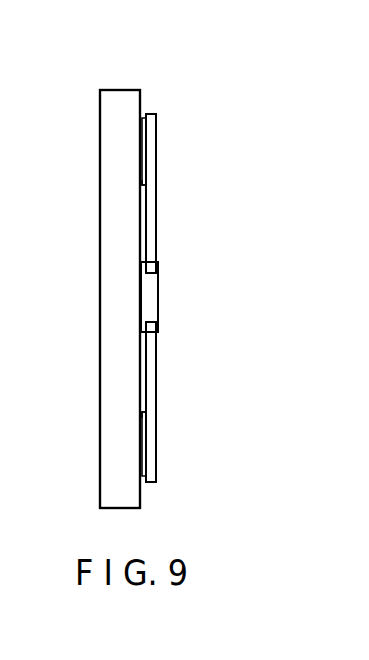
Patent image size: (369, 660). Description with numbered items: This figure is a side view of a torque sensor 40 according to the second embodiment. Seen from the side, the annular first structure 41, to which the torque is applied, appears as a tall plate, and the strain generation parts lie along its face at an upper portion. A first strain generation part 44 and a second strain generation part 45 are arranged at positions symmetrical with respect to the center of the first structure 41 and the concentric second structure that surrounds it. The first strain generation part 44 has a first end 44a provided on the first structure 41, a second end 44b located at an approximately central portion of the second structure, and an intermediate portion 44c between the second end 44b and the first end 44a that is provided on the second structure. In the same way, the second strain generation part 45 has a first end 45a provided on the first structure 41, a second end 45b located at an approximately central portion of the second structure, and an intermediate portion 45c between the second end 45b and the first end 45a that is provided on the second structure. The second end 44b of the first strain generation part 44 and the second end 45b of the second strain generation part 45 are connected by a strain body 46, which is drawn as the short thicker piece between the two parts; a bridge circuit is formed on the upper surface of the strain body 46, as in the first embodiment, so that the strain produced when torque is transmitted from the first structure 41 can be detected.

The torque sensor 40 is at (82, 72).
The first structure 41 is at (121, 100).
The first strain generation part 44 is at (157, 207).
The first end of the first strain generation part 44a is at (144, 115).
The second end of the first strain generation part 44b is at (157, 251).
The intermediate portion of the first strain generation part 44c is at (147, 183).
The second strain generation part 45 is at (157, 385).
The first end of the second strain generation part 45a is at (157, 483).
The second end of the second strain generation part 45b is at (157, 347).
The intermediate portion of the second strain generation part 45c is at (146, 416).
The strain body 46 is at (158, 297).